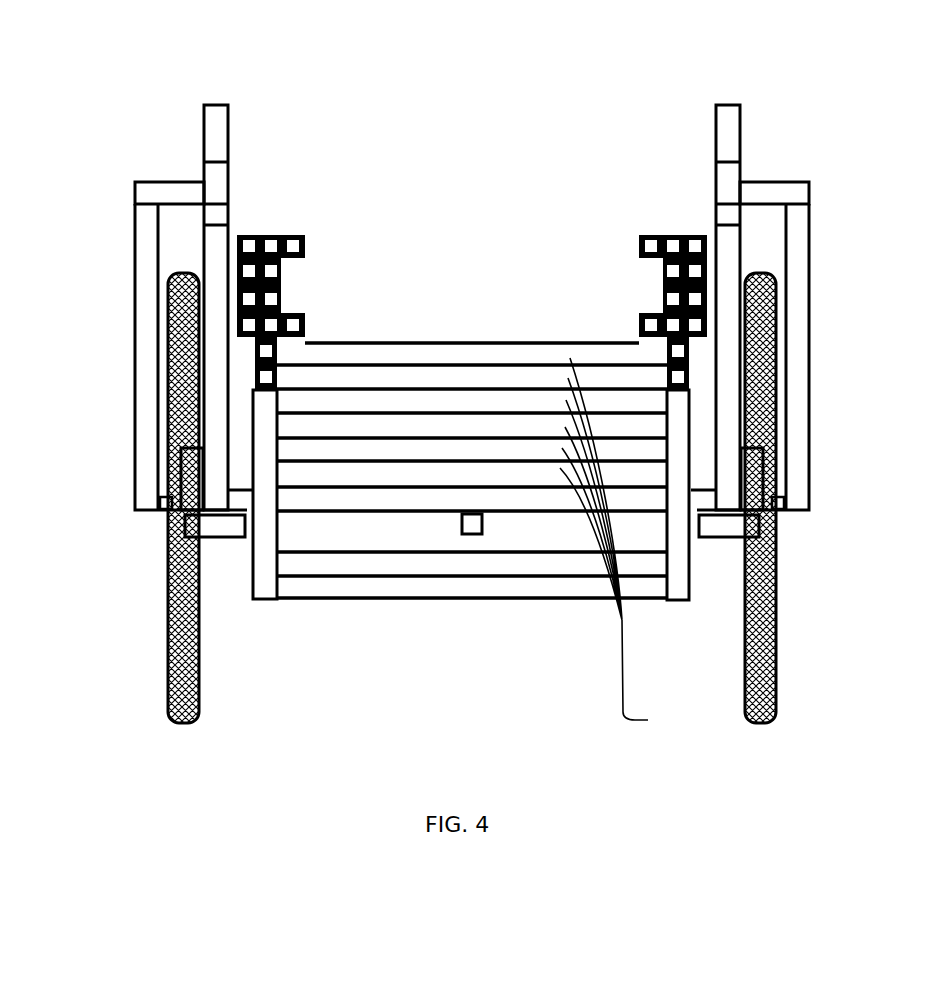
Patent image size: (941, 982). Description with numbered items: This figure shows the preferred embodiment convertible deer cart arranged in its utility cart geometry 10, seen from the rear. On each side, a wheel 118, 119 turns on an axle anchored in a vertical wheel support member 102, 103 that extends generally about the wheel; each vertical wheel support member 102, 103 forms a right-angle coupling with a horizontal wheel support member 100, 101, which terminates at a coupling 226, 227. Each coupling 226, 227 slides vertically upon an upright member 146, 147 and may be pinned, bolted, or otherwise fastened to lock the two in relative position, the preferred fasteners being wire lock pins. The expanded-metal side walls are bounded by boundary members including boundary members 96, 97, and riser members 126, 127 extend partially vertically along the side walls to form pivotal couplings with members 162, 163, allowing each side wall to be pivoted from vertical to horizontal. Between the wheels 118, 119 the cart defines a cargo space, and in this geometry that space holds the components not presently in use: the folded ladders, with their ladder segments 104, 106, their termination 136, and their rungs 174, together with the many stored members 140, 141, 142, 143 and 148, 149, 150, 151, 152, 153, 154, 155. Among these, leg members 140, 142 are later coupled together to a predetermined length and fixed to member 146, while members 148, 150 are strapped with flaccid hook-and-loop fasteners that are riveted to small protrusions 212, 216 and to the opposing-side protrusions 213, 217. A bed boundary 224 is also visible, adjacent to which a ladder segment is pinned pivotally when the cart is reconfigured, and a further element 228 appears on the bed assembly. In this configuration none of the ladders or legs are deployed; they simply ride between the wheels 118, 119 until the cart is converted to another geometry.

The utility cart geometry 10 is at (808, 89).
The boundary member 96 is at (215, 473).
The boundary member 97 is at (722, 475).
The horizontal wheel support member 100 is at (155, 190).
The horizontal wheel support member 101 is at (780, 198).
The vertical wheel support member 102 is at (150, 462).
The vertical wheel support member 103 is at (815, 430).
The ladder segment 104 is at (690, 358).
The ladder segment 106 is at (257, 383).
The wheel 118 is at (167, 660).
The wheel 119 is at (770, 705).
The riser member 126 is at (190, 497).
The riser member 127 is at (777, 525).
The termination 136 is at (682, 592).
The leg member 140 is at (300, 327).
The member 141 is at (642, 328).
The leg member 142 is at (283, 247).
The member 143 is at (653, 240).
The member 146 is at (218, 160).
The member 147 is at (727, 158).
The member 148 is at (292, 262).
The member 149 is at (645, 270).
The member 150 is at (275, 295).
The member 151 is at (665, 295).
The member 152 is at (237, 268).
The member 153 is at (710, 265).
The member 154 is at (237, 302).
The member 155 is at (710, 298).
The member 162 is at (215, 528).
The member 163 is at (752, 530).
The rungs 174 is at (626, 544).
The small protrusion 212 is at (250, 243).
The protrusion 213 is at (690, 237).
The small protrusion 216 is at (237, 330).
The protrusion 217 is at (710, 330).
The bed boundary 224 is at (317, 502).
The coupling 226 is at (217, 212).
The coupling 227 is at (720, 207).
The center sensor block 228 is at (482, 520).